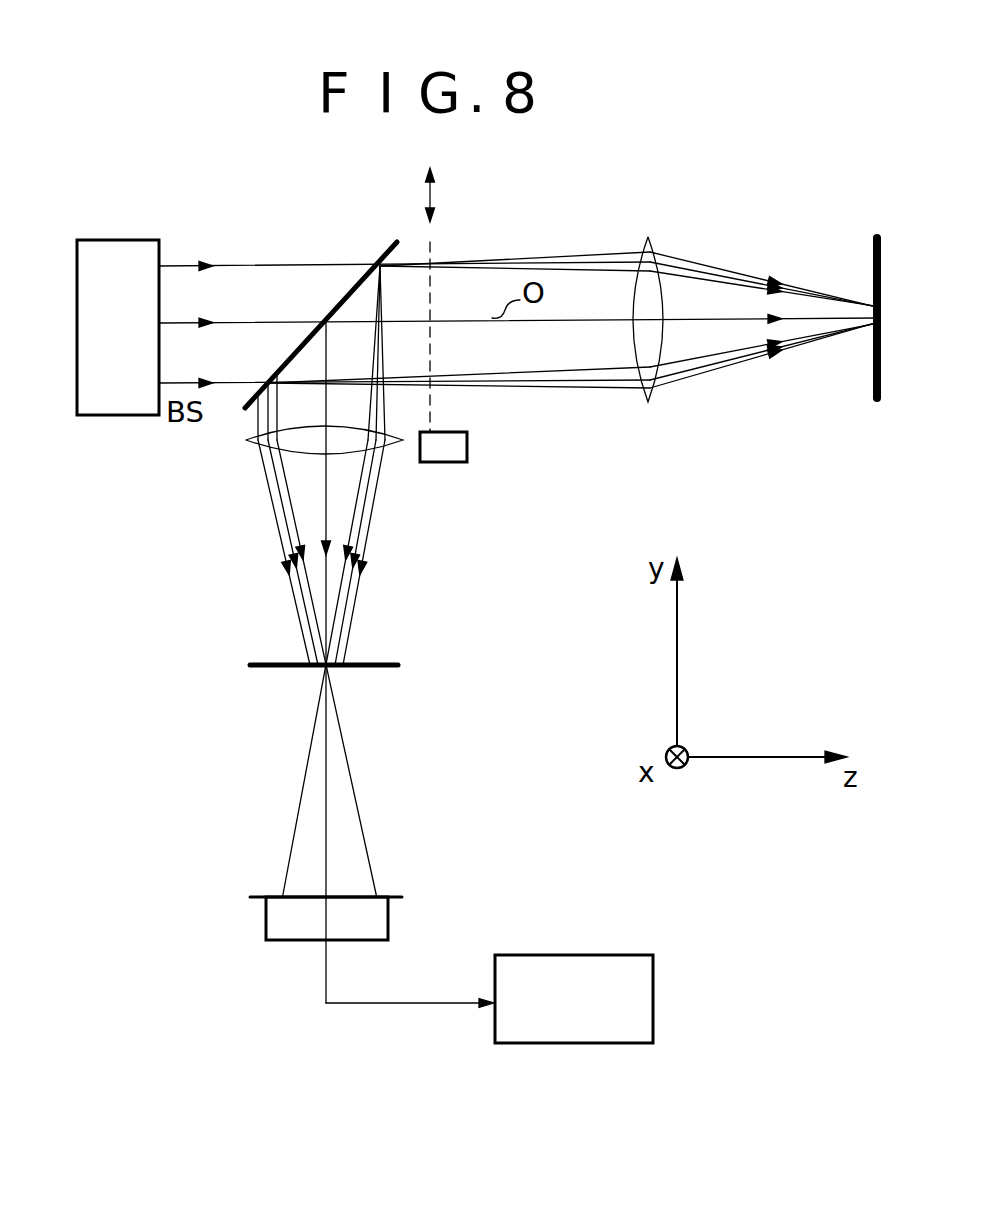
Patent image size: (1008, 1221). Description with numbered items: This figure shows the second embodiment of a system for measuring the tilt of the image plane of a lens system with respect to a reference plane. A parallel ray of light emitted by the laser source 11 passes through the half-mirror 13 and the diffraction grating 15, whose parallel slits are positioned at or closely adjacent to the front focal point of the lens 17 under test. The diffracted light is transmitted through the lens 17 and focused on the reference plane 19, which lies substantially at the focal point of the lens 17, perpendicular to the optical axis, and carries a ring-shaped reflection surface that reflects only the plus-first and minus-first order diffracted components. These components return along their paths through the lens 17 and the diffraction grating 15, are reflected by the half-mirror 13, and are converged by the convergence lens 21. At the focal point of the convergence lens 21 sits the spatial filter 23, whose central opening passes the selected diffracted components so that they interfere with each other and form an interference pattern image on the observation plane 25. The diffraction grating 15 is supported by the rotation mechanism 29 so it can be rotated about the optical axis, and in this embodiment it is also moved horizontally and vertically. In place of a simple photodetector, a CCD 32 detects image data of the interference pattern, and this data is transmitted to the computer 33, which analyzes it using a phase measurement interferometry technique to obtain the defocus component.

The laser source 11 is at (108, 240).
The half-mirror 13 is at (353, 288).
The diffraction grating 15 is at (432, 248).
The lens 17 is at (654, 243).
The reference plane 19 is at (873, 252).
The convergence lens 21 is at (292, 445).
The spatial filter 23 is at (272, 662).
The observation plane 25 is at (256, 896).
The rotation mechanism 29 is at (450, 458).
The CCD 32 is at (272, 922).
The computer 33 is at (562, 962).